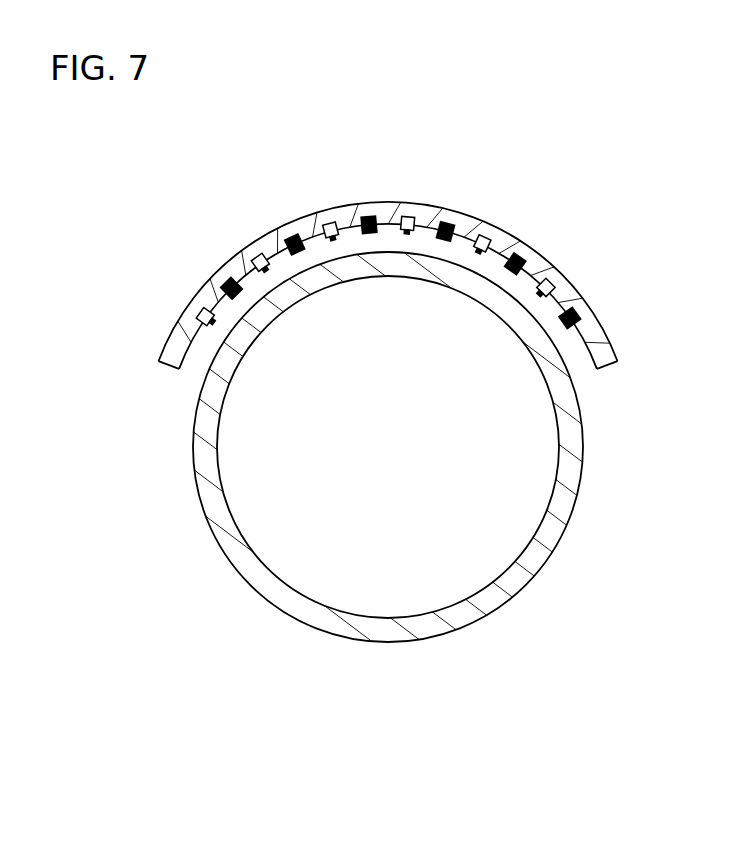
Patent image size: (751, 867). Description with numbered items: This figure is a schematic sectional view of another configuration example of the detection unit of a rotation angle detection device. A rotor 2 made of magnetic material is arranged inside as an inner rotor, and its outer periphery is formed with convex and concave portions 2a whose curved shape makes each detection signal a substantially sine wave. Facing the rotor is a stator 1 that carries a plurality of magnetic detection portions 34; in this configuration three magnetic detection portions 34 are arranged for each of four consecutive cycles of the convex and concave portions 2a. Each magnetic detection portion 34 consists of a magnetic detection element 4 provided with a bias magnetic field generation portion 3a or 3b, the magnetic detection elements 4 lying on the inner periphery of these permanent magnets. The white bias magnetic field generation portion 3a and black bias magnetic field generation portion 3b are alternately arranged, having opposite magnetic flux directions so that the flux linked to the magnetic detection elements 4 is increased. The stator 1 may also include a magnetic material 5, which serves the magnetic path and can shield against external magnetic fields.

The stator 1 is at (535, 217).
The rotor 2 is at (585, 465).
The convex and concave portions 2a is at (583, 397).
The bias magnetic field generation portion 3a is at (404, 216).
The bias magnetic field generation portion 3b is at (440, 222).
The magnetic detection element 4 is at (400, 233).
The magnetic material 5 is at (570, 280).
The magnetic detection portion 34 is at (395, 243).